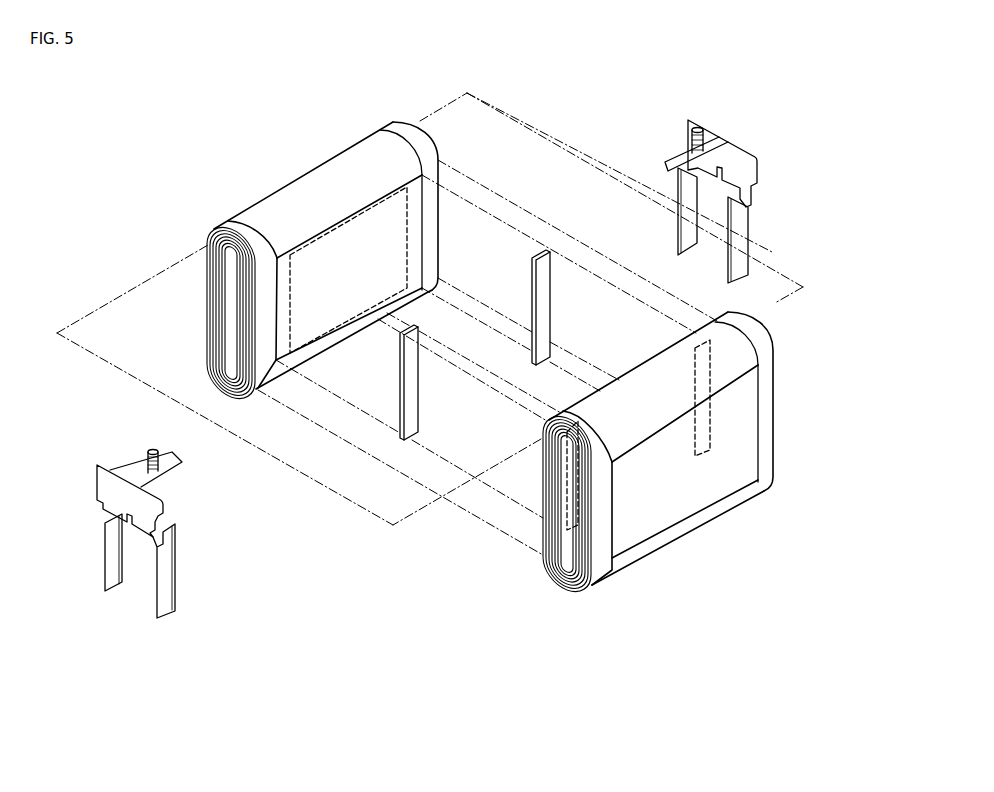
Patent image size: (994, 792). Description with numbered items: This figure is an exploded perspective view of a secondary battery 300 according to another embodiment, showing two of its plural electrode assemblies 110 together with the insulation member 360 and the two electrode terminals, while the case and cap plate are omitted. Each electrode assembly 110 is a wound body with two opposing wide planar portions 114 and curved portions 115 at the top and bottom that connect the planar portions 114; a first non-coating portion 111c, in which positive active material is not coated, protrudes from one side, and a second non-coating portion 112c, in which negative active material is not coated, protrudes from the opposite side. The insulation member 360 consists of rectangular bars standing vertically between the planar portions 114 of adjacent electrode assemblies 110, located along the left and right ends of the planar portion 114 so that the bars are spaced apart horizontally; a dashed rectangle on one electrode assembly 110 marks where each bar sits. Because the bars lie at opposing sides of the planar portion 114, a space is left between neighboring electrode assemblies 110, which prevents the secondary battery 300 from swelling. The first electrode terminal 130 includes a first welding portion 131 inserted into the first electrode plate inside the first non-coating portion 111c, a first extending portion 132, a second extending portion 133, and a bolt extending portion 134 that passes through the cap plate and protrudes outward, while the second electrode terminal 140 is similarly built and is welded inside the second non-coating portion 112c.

The secondary battery 300 is at (809, 113).
The electrode assembly 110 is at (337, 145).
The first non-coating portion 111c is at (265, 382).
The second non-coating portion 112c is at (403, 128).
The planar portion 114 is at (328, 313).
The curved portion 115 is at (323, 190).
The insulation member 360 is at (412, 369).
The first electrode terminal 130 is at (113, 515).
The first welding portion 131 is at (113, 557).
The first extending portion 132 is at (100, 484).
The second extending portion 133 is at (133, 472).
The bolt extending portion 134 is at (150, 451).
The second electrode terminal 140 is at (700, 120).